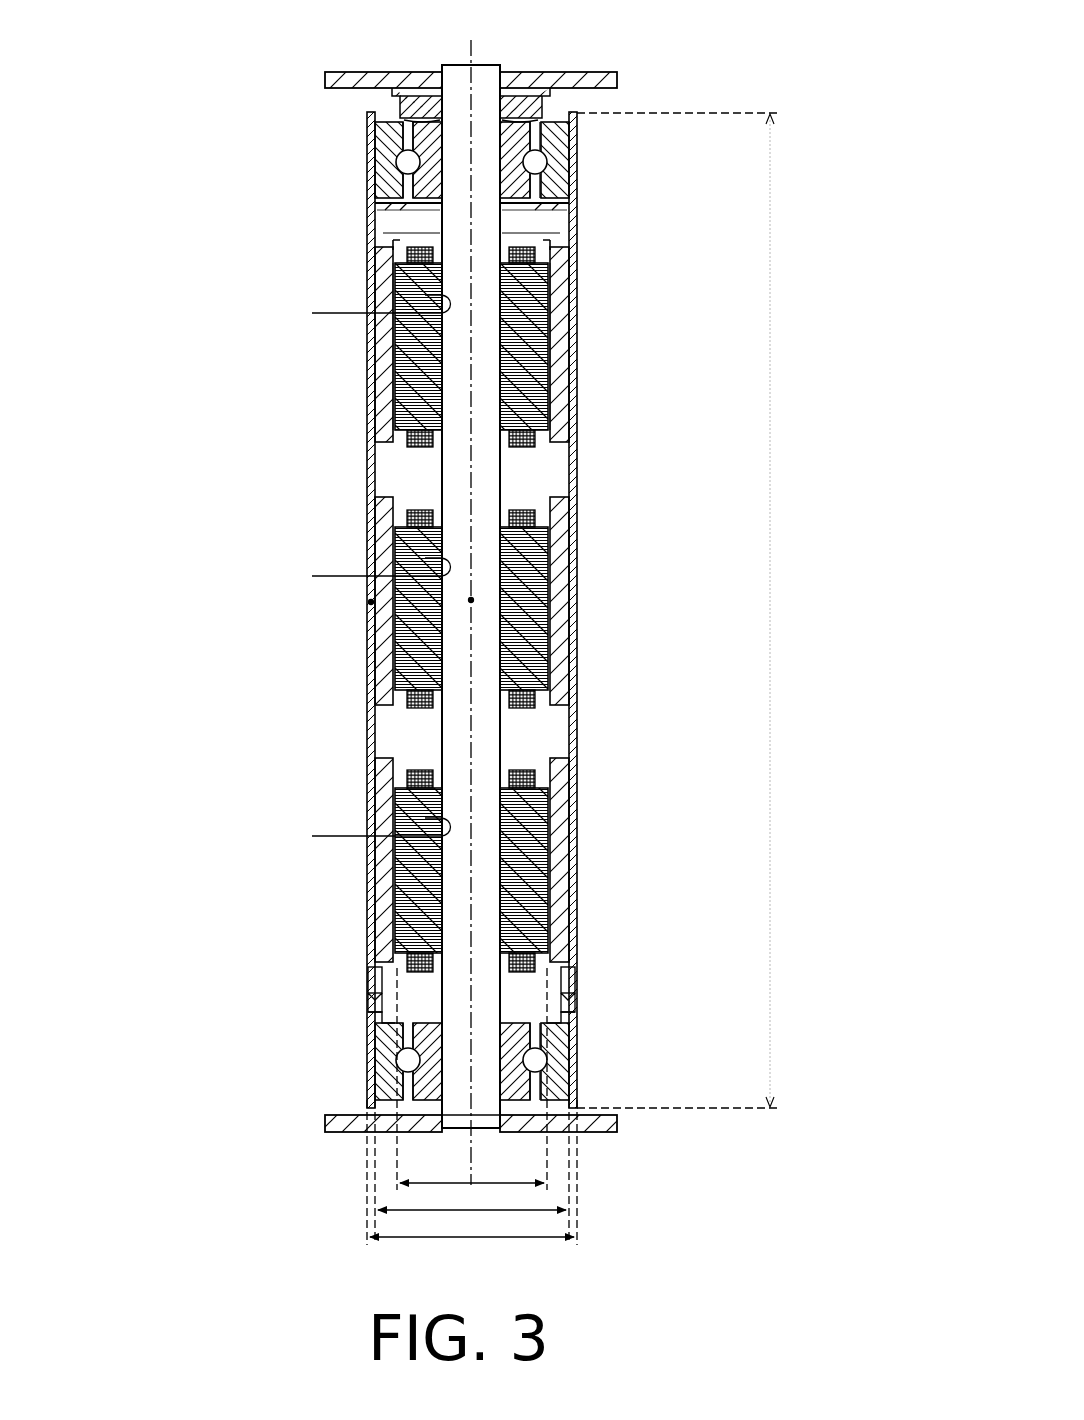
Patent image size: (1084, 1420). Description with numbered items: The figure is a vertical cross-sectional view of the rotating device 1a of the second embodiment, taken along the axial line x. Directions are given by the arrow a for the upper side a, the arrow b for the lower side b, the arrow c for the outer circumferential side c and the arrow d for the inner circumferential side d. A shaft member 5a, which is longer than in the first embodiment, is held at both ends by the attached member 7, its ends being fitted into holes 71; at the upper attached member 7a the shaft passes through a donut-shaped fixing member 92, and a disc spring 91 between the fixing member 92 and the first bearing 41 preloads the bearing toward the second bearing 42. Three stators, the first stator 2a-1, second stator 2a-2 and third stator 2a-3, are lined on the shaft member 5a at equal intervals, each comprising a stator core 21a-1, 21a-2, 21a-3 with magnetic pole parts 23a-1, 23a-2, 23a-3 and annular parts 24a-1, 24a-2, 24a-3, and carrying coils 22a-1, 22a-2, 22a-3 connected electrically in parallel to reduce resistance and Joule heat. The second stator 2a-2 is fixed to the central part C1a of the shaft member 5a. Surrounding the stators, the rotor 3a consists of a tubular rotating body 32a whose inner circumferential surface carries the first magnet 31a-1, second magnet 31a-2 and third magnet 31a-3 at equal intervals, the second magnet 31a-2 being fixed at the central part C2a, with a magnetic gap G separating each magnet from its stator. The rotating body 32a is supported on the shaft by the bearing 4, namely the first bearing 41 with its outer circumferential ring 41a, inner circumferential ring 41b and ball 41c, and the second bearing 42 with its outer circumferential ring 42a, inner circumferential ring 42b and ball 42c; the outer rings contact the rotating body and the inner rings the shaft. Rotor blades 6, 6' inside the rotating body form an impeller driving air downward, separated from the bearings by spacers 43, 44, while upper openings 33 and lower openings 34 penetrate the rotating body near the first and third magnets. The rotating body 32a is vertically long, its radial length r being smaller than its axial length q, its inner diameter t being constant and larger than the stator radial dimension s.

The rotating device 1a is at (760, 42).
The first stator 2a-1 is at (323, 349).
The second stator 2a-2 is at (323, 612).
The third stator 2a-3 is at (323, 872).
The stator core 21a-1 is at (359, 346).
The stator core 21a-2 is at (359, 608).
The stator core 21a-3 is at (359, 870).
The coil 22a-1 is at (405, 446).
The coil 22a-2 is at (405, 710).
The coil 22a-3 is at (405, 970).
The magnetic pole part 23a-1 is at (395, 266).
The magnetic pole part 23a-2 is at (395, 530).
The magnetic pole part 23a-3 is at (395, 791).
The annular part 24a-1 is at (349, 310).
The annular part 24a-2 is at (349, 573).
The annular part 24a-3 is at (349, 833).
The rotor 3a is at (555, 610).
The first magnet 31a-1 is at (578, 415).
The second magnet 31a-2 is at (578, 602).
The third magnet 31a-3 is at (536, 860).
The rotating body 32a is at (578, 730).
The bearing 4 is at (554, 611).
The first bearing 41 is at (554, 163).
The outer circumferential ring 41a is at (540, 164).
The inner circumferential ring 41b is at (585, 134).
The ball 41c is at (560, 183).
The second bearing 42 is at (554, 1060).
The outer circumferential ring 42a is at (540, 1062).
The inner circumferential ring 42b is at (578, 1030).
The ball 42c is at (560, 1078).
The spacer 43 is at (575, 207).
The spacer 44 is at (375, 1012).
The upper opening 33 is at (576, 228).
The lower opening 34 is at (576, 984).
The shaft member 5a is at (496, 68).
The rotor blade 6 is at (472, 249).
The rotor blade 6' is at (471, 969).
The attached member 7 is at (600, 1132).
The attached member 7a is at (588, 73).
The hole 71 is at (536, 54).
The disc spring 91 is at (382, 120).
The fixing member 92 is at (410, 118).
The magnetic gap G is at (578, 316).
The central part C1a is at (471, 600).
The central part C2a is at (370, 602).
The axial line x is at (470, 47).
The upper side a is at (471, 5).
The lower side b is at (471, 1145).
The outer circumferential side c is at (350, 14).
The inner circumferential side d is at (420, 14).
The length in the axial line direction q is at (683, 610).
The outer diameter r is at (472, 1172).
The radial dimension s is at (472, 1079).
The inner diameter t is at (472, 1170).